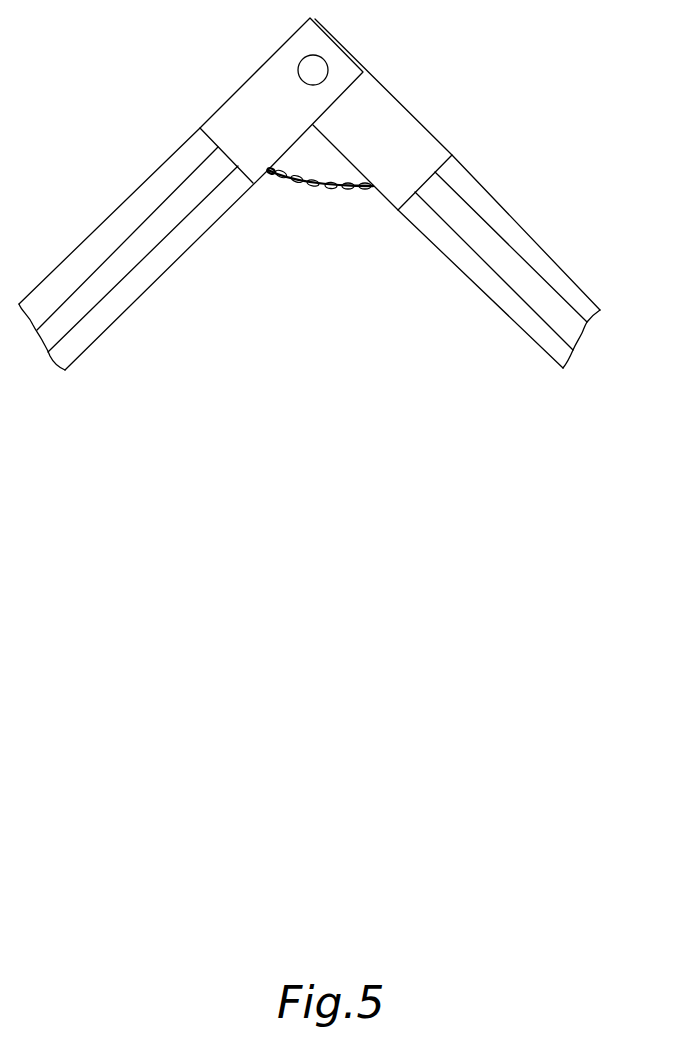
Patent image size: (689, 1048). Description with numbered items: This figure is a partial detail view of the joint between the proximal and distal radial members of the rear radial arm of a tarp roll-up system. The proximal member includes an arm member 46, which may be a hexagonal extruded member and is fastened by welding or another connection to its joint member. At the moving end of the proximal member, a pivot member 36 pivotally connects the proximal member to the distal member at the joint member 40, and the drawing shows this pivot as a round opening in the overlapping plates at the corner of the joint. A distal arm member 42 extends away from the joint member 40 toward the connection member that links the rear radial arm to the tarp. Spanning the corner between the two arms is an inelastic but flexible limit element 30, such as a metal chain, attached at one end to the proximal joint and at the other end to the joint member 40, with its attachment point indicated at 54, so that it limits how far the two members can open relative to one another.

The limit element 30 is at (332, 188).
The pivot member 36 is at (307, 63).
The joint member 40 is at (367, 85).
The distal arm member 42 is at (485, 203).
The arm member 46 is at (125, 210).
The chain attachment 54 is at (268, 173).